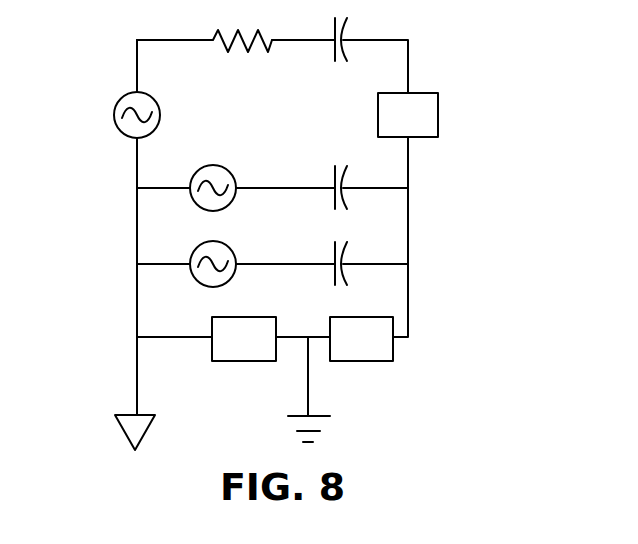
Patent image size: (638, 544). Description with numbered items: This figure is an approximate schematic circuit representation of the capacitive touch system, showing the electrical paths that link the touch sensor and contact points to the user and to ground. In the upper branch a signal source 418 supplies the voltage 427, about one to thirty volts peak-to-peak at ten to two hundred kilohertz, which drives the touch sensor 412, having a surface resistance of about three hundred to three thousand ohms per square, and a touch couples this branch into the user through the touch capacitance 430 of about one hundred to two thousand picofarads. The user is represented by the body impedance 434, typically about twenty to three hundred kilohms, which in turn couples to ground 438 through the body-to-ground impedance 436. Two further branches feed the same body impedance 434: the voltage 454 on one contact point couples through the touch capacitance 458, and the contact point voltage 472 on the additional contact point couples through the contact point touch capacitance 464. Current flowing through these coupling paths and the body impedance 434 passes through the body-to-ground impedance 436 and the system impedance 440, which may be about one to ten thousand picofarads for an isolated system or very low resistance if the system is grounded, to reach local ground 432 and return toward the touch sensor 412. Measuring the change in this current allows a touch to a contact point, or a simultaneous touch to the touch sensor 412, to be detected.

The touch sensor 412 is at (235, 30).
The AC voltage source 418 is at (115, 123).
The voltage 427 is at (137, 57).
The touch capacitance 430 is at (347, 30).
The local ground 432 is at (148, 428).
The body impedance 434 is at (427, 124).
The body-to-ground impedance 436 is at (380, 348).
The ground 438 is at (326, 418).
The system impedance 440 is at (263, 348).
The voltage 454 is at (232, 202).
The touch capacitance 458 is at (346, 176).
The contact point touch capacitance 464 is at (346, 252).
The contact point voltage 472 is at (232, 278).